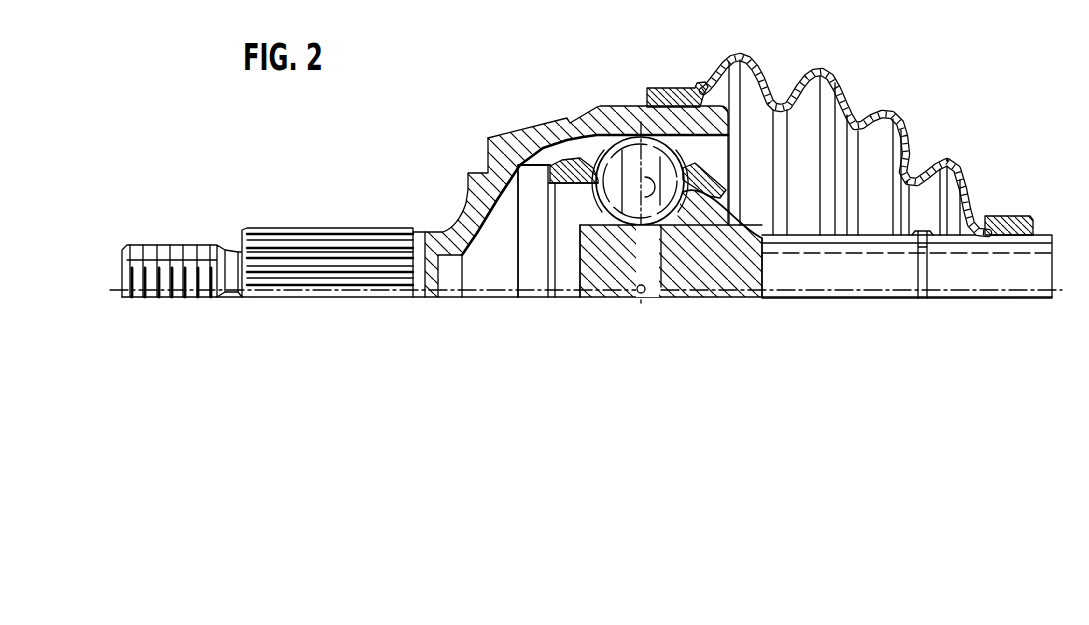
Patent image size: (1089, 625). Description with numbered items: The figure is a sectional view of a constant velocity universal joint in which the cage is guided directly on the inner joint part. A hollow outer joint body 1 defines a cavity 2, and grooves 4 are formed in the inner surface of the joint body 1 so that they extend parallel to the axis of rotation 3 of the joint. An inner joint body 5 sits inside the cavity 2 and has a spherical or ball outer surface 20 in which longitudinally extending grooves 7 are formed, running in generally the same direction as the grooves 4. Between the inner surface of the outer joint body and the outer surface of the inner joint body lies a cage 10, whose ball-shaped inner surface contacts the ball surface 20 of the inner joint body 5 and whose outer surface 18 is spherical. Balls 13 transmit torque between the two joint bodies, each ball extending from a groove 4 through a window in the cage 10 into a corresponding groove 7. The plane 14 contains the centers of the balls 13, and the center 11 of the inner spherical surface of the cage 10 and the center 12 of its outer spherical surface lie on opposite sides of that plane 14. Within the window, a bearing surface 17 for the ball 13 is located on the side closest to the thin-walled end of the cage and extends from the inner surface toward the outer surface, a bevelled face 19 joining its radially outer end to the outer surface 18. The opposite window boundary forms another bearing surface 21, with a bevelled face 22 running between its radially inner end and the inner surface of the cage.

The hollow joint body 1 is at (517, 152).
The cavity 2 is at (455, 208).
The axis of rotation 3 is at (280, 290).
The grooves 4 is at (572, 146).
The inner joint body 5 is at (745, 252).
The grooves 7 is at (795, 256).
The cage 10 is at (564, 225).
The center 11 is at (663, 253).
The center 12 is at (620, 250).
The balls 13 is at (659, 153).
The plane 14 is at (646, 242).
The bearing surface 17 is at (742, 253).
The outer surface 18 is at (621, 148).
The bevelled face 19 is at (688, 193).
The ball outer surface 20 is at (756, 197).
The bearing surface 21 is at (605, 237).
The bevelled face 22 is at (562, 160).